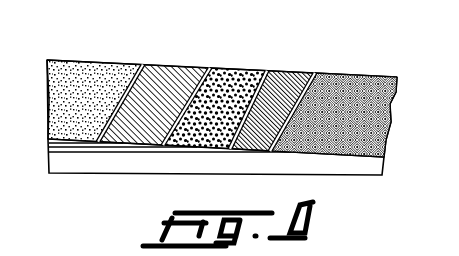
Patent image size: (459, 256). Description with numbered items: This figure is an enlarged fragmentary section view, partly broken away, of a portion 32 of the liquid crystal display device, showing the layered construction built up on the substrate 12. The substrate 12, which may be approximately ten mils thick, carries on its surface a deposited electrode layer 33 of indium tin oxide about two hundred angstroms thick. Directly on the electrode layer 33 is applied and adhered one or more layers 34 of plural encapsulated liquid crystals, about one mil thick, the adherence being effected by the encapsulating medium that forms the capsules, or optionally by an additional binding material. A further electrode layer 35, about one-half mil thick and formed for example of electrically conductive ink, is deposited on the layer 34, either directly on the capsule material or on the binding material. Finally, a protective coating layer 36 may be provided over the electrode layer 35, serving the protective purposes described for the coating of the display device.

The portion 32 is at (114, 37).
The protective coating layer 36 is at (118, 63).
The electrode layer 35 is at (177, 65).
The layer of plural encapsulated liquid crystals 34 is at (232, 69).
The electrode layer 33 is at (291, 72).
The substrate 12 is at (373, 78).